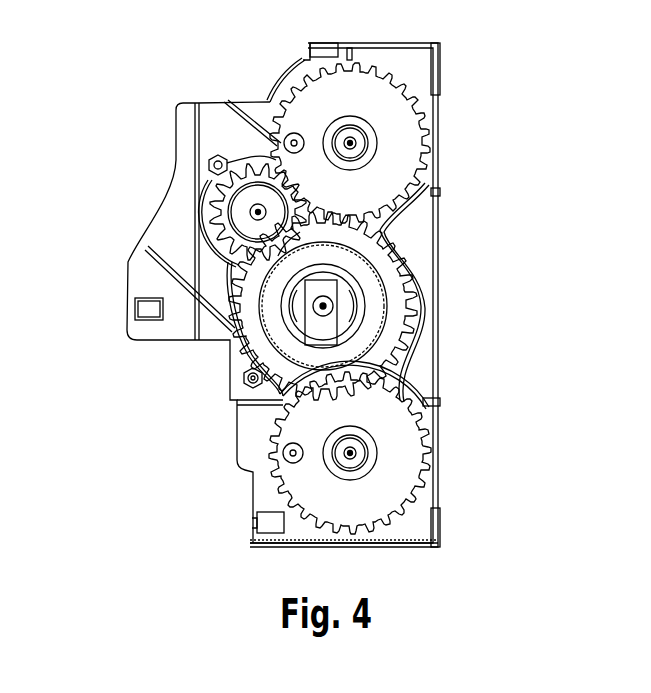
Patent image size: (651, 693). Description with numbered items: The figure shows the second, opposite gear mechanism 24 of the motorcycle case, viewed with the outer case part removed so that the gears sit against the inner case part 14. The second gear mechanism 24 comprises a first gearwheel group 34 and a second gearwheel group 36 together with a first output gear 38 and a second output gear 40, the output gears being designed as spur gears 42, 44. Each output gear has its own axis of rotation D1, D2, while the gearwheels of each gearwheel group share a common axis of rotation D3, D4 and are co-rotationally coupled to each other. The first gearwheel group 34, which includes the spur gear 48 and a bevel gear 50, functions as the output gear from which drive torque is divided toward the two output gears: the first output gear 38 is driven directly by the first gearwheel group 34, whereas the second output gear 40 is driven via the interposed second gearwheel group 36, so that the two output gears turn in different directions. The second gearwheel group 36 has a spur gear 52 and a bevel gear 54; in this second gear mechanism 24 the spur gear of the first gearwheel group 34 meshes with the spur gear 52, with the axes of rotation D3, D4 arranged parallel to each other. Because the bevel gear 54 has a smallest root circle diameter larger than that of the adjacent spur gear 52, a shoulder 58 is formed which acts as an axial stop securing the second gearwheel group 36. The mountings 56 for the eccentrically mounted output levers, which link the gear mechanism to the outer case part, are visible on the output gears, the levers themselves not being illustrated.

The inner case part 14 is at (402, 62).
The second gear mechanism 24 is at (460, 543).
The first gearwheel group 34 is at (216, 307).
The second gearwheel group 36 is at (235, 200).
The first output gear 38 is at (310, 485).
The second output gear 40 is at (325, 96).
The spur gear 42 is at (350, 453).
The spur gear 44 is at (350, 143).
The spur gear 48 is at (403, 347).
The bevel gear 50 is at (397, 275).
The spur gear 52 is at (297, 204).
The bevel gear 54 is at (330, 158).
The mountings 56 is at (290, 147).
The shoulder 58 is at (225, 254).
The axis of rotation D1 is at (352, 454).
The axis of rotation D2 is at (352, 143).
The axis of rotation D3 is at (321, 307).
The axis of rotation D4 is at (256, 213).